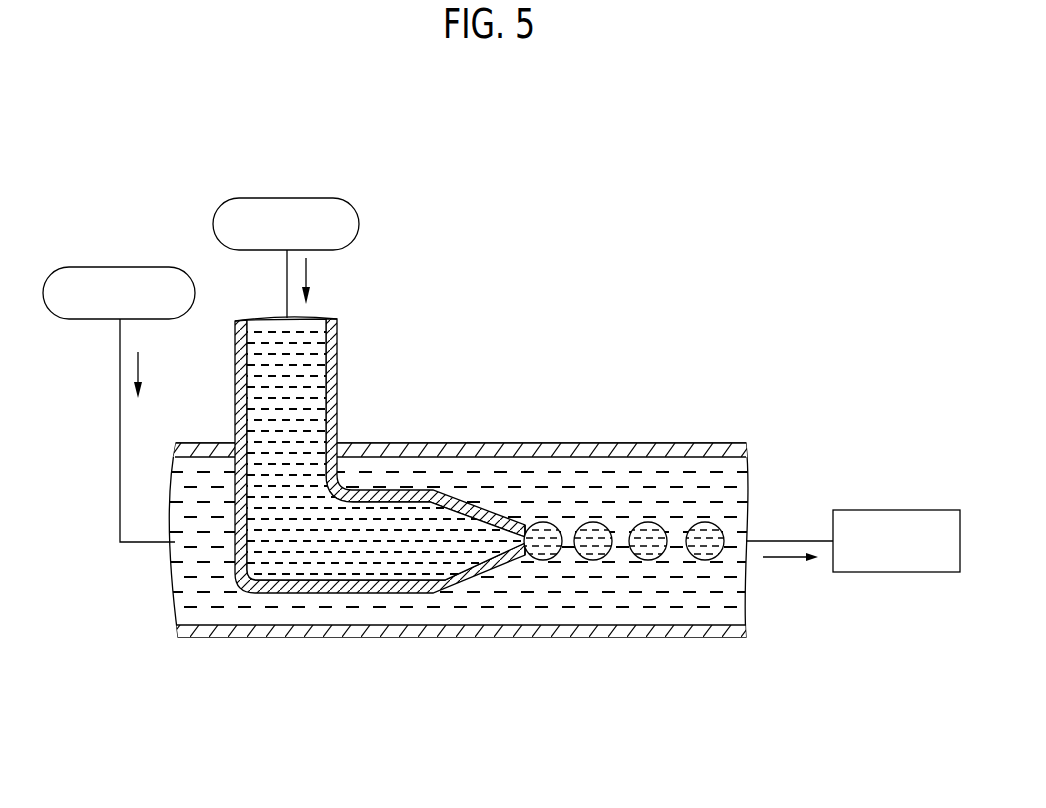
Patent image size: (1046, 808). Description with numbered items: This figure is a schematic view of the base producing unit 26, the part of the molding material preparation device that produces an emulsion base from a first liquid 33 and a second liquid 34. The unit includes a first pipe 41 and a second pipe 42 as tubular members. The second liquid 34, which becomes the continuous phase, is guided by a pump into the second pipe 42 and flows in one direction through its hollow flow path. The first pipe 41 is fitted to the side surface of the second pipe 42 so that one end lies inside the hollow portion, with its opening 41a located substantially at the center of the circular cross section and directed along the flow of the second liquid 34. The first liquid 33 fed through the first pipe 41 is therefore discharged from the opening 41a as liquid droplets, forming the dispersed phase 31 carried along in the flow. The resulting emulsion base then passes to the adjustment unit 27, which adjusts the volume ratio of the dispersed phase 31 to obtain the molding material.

The base producing unit 26 is at (289, 650).
The adjustment unit 27 is at (887, 572).
The dispersed phase 31 is at (648, 524).
The first liquid 33 is at (305, 198).
The second liquid 34 is at (138, 267).
The first pipe 41 is at (410, 490).
The opening 41a is at (530, 541).
The second pipe 42 is at (520, 443).